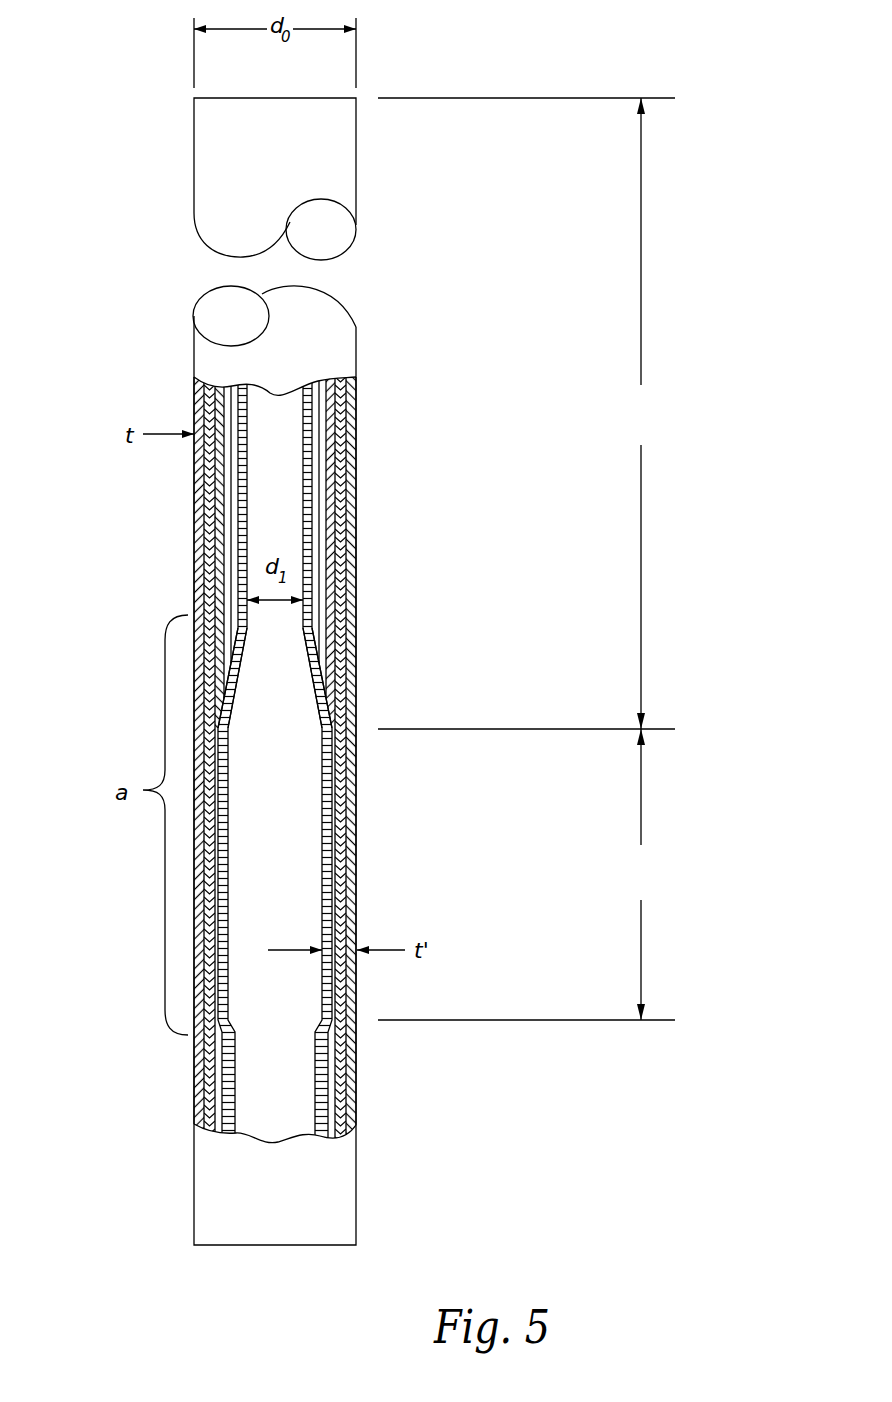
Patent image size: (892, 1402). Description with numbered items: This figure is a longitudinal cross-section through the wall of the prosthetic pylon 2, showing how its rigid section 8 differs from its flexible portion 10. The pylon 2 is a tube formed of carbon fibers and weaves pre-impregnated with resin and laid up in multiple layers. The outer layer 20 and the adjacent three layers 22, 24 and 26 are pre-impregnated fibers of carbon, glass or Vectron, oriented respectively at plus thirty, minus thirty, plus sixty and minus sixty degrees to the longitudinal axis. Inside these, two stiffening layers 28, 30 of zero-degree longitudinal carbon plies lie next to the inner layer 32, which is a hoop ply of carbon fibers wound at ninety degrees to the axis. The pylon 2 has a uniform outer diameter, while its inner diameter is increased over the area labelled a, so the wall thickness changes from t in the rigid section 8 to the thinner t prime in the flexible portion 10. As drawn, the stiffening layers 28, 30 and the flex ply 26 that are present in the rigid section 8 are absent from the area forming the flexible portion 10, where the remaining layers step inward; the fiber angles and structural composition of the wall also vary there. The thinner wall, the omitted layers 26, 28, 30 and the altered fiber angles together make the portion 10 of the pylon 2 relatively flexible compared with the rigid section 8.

The pylon 2 is at (162, 540).
The rigid section 8 is at (549, 413).
The flexible portion 10 is at (551, 874).
The outer layer 20 is at (356, 384).
The second layer 22 is at (352, 430).
The third layer 24 is at (340, 473).
The fourth layer 26 is at (330, 520).
The stiffening layer 28 is at (317, 590).
The stiffening layer 30 is at (310, 620).
The inner layer 32 is at (328, 738).